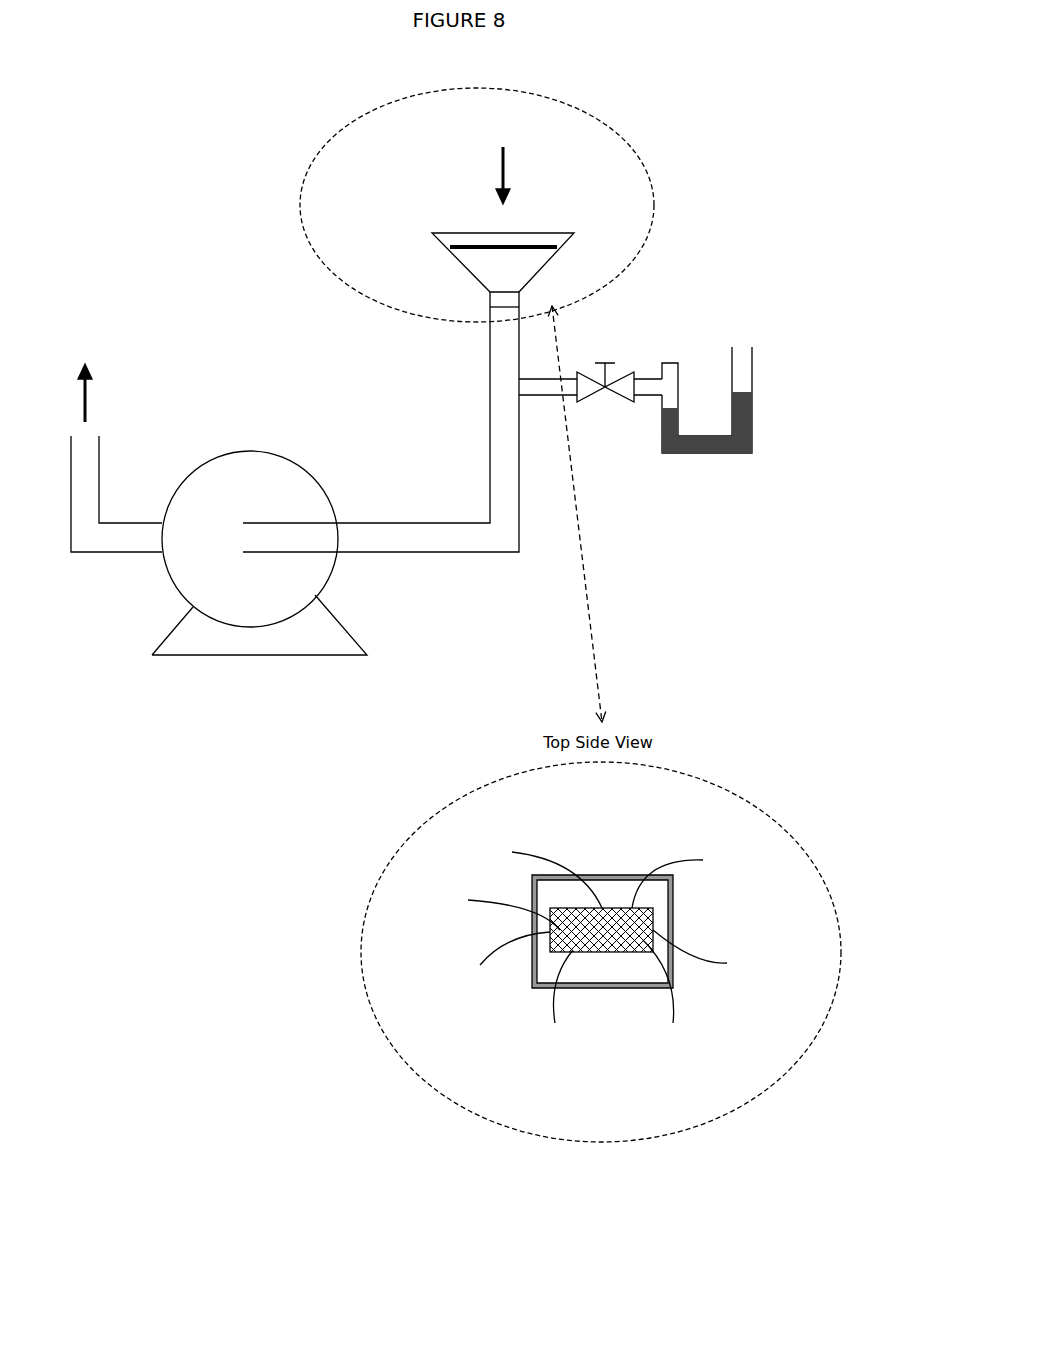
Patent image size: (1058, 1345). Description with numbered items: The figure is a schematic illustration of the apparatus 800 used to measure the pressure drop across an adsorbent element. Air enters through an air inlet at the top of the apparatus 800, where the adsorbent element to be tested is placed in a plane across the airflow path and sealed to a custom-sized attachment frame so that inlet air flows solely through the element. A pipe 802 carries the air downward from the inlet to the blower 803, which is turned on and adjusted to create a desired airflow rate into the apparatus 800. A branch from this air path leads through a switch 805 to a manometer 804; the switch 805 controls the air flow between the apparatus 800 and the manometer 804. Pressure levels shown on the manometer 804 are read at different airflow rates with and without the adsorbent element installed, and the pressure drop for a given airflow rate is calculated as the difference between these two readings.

The apparatus 800 is at (189, 205).
The pipe 802 is at (488, 350).
The blower 803 is at (247, 553).
The manometer 804 is at (755, 393).
The switch 805 is at (608, 357).